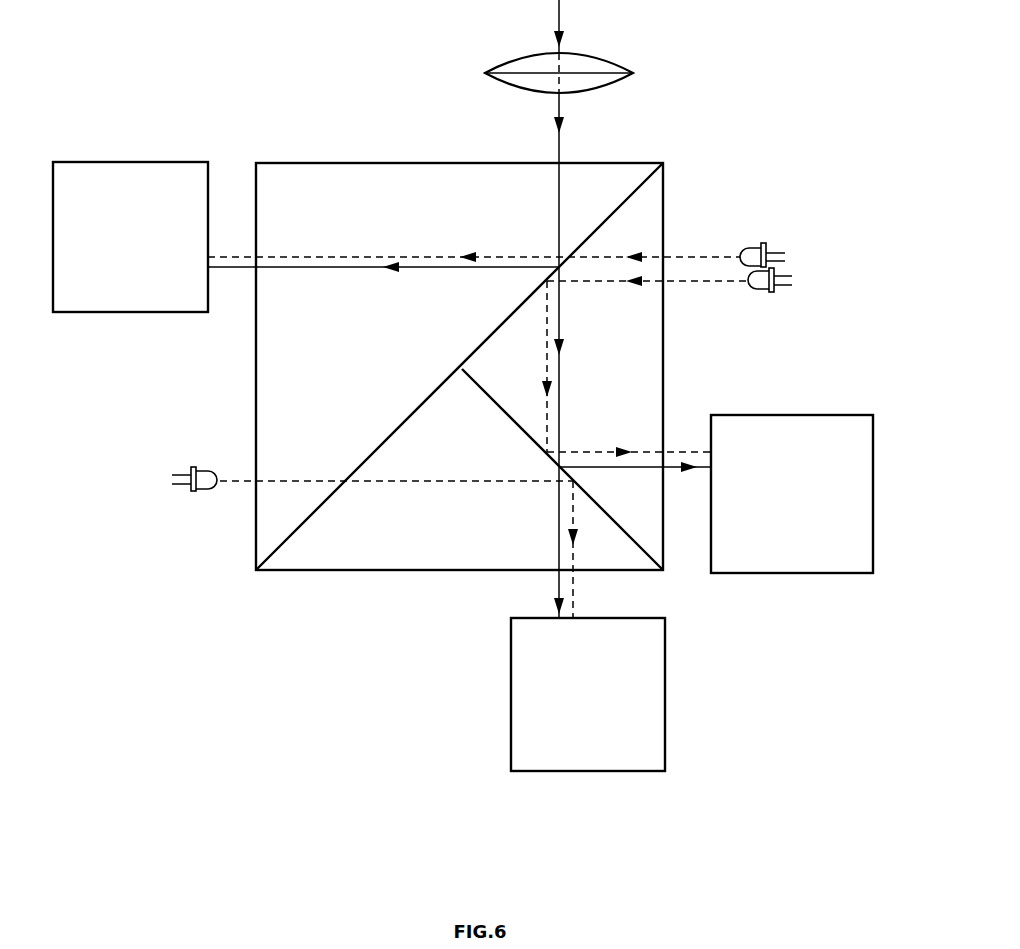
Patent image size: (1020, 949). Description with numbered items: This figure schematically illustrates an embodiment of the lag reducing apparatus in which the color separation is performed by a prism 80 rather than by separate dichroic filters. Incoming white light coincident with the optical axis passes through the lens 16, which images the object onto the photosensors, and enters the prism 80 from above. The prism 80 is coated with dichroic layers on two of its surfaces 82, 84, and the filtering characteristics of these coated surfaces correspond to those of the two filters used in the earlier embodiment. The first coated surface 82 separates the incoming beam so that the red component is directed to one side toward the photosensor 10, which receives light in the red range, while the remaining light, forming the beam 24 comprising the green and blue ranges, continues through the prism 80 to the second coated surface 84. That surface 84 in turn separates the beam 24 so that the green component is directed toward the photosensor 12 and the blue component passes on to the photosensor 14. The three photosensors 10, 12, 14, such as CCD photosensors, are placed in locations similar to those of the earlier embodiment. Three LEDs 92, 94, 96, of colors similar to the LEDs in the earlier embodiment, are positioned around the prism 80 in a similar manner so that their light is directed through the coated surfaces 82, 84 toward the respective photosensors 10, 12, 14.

The photosensor 10 is at (133, 160).
The photosensor 12 is at (873, 500).
The photosensor 14 is at (665, 705).
The lens 16 is at (617, 61).
The beam 24 is at (562, 318).
The prism 80 is at (357, 162).
The surface 82 is at (490, 338).
The surface 84 is at (495, 398).
The LED 92 is at (755, 248).
The LED 94 is at (762, 288).
The LED 96 is at (206, 489).